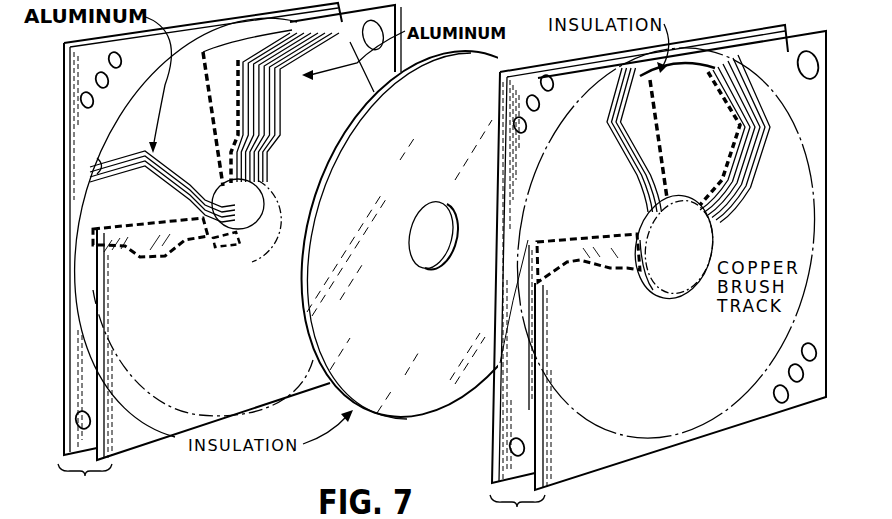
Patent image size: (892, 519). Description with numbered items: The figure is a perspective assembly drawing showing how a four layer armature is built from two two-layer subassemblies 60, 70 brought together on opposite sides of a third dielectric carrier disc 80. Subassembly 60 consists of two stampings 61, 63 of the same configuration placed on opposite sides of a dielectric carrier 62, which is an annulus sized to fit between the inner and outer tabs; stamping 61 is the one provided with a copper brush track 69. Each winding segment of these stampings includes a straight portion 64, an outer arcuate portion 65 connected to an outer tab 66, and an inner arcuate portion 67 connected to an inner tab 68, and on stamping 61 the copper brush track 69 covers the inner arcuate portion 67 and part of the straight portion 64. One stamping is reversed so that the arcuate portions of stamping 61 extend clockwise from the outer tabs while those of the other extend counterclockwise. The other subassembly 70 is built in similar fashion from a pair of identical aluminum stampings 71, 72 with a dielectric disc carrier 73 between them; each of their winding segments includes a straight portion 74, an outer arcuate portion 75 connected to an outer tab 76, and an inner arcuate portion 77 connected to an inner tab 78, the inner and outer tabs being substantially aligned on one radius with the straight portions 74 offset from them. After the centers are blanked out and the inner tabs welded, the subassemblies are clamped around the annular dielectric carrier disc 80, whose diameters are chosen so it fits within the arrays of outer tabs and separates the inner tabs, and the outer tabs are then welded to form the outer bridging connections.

The two layer subassembly 60 is at (517, 507).
The stamping 61 is at (572, 466).
The dielectric carrier 62 is at (567, 252).
The stamping 63 is at (497, 445).
The straight portion 64 is at (747, 131).
The outer arcuate portion 65 is at (722, 92).
The outer tab 66 is at (713, 72).
The inner arcuate portion 67 is at (700, 183).
The inner tab 68 is at (707, 230).
The copper brush track 69 is at (732, 188).
The two layer subassembly 70 is at (85, 483).
The aluminum stamping 71 is at (133, 442).
The aluminum stamping 72 is at (60, 457).
The dielectric disc carrier 73 is at (214, 74).
The straight portion 74 is at (247, 100).
The outer arcuate portion 75 is at (122, 167).
The outer tab 76 is at (93, 170).
The inner arcuate portion 77 is at (240, 157).
The inner tab 78 is at (267, 182).
The dielectric carrier disc 80 is at (430, 398).